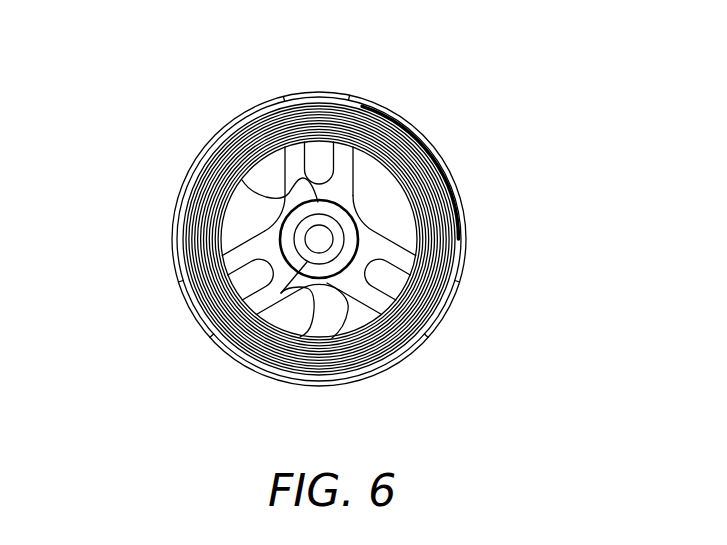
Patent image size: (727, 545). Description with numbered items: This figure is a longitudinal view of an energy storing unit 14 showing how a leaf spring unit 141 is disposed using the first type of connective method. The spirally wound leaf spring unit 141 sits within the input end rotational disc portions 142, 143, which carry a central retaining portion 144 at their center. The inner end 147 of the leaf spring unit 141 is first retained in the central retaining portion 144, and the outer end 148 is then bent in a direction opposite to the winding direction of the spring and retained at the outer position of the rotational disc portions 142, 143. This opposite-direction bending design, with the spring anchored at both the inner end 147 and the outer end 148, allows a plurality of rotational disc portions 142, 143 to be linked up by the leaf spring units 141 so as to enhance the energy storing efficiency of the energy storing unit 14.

The energy storing unit 14 is at (402, 62).
The leaf spring unit 141 is at (202, 208).
The input end rotational disc portion 142 is at (467, 172).
The input end rotational disc portion 143 is at (448, 170).
The central retaining portion 144 is at (300, 336).
The inner end 147 is at (242, 180).
The outer end 148 is at (327, 96).